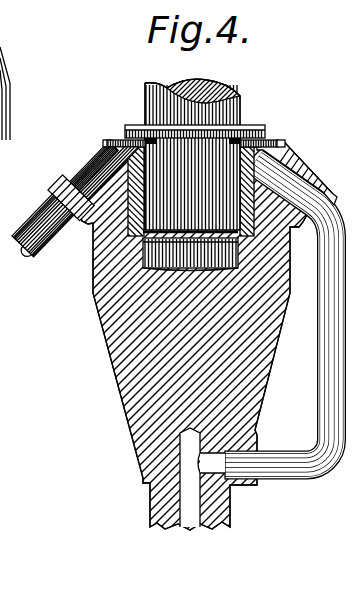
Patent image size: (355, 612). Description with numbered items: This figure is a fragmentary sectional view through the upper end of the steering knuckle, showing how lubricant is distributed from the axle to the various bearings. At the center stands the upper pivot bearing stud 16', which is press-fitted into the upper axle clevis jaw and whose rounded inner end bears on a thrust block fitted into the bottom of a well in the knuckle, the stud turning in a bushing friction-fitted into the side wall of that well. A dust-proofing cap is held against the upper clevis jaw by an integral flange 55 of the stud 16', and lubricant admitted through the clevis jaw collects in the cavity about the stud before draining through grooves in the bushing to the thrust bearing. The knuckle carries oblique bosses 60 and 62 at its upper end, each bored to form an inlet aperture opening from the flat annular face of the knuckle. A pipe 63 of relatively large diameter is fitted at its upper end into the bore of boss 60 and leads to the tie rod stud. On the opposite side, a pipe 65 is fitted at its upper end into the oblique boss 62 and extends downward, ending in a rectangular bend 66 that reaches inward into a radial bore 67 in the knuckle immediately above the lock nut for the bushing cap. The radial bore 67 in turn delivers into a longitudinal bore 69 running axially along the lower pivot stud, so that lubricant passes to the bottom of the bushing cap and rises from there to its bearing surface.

The upper pivot bearing stud 16' is at (221, 173).
The integral flange 55 is at (107, 140).
The oblique boss 60 is at (86, 166).
The oblique boss 62 is at (309, 168).
The pipe 63 is at (52, 232).
The pipe 65 is at (323, 333).
The rectangular bend 66 is at (323, 470).
The radial bore 67 is at (213, 467).
The longitudinal bore 69 is at (190, 504).